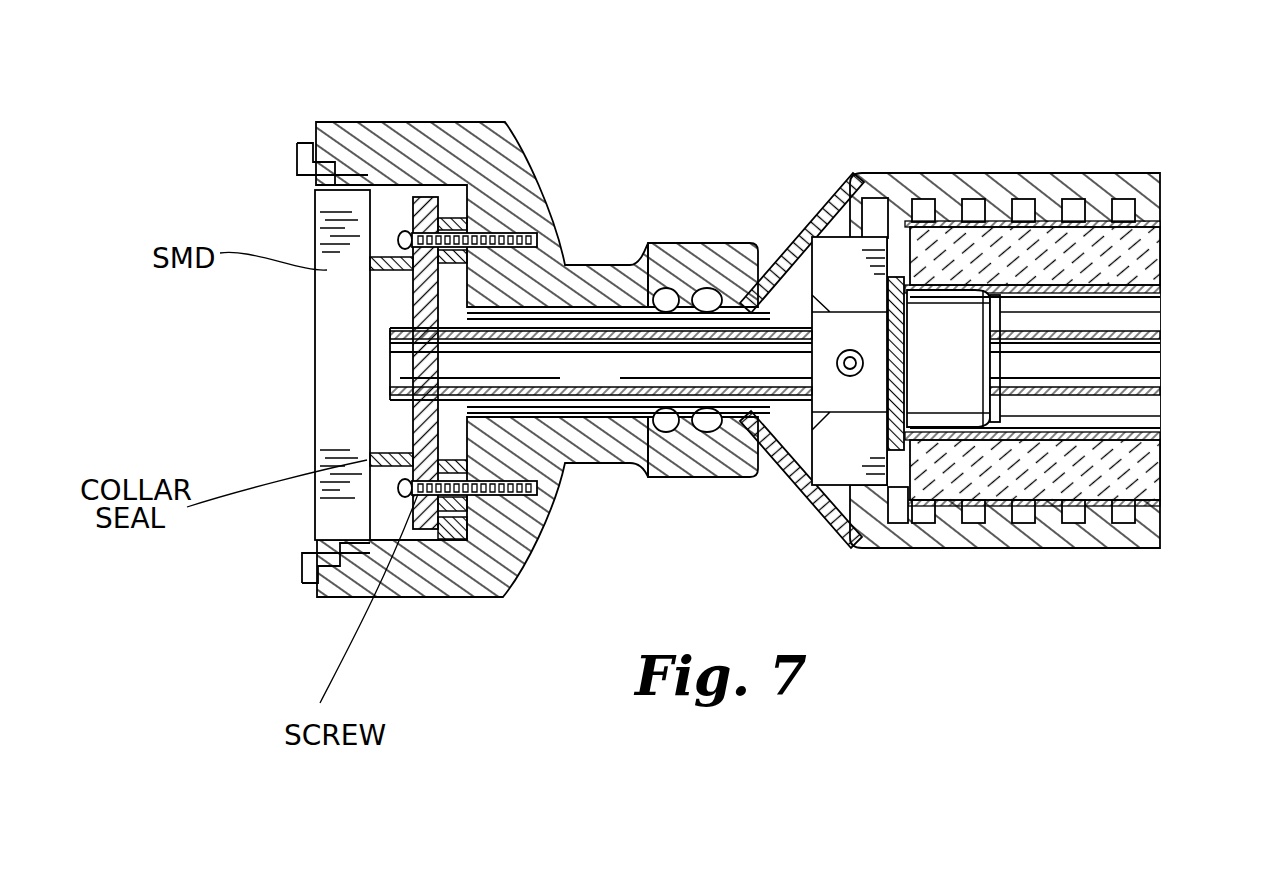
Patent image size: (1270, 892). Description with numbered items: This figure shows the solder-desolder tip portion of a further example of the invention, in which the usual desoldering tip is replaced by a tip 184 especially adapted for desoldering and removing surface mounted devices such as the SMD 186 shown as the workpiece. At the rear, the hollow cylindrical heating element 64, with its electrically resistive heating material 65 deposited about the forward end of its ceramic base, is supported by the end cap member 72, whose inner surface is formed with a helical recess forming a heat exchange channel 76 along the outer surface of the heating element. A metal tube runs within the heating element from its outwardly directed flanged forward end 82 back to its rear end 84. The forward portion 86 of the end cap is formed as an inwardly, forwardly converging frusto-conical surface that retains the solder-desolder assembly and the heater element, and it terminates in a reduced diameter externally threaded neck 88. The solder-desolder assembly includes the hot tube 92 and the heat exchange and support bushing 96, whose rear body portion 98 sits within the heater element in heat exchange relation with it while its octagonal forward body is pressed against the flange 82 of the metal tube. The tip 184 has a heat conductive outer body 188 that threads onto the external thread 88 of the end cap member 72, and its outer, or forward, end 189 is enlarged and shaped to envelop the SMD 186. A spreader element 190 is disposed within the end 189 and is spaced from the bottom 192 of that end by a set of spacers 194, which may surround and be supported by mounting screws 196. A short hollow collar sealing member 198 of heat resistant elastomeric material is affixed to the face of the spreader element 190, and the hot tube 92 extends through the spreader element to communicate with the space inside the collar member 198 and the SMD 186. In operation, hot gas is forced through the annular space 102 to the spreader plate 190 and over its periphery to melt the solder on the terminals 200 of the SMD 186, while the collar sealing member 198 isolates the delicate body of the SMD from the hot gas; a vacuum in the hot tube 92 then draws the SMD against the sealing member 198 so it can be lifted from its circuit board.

The terminals 200 is at (297, 145).
The tip 184 is at (392, 115).
The SMD 186 is at (314, 205).
The bottom 192 is at (470, 266).
The heat conductive outer body 188 is at (660, 243).
The externally threaded neck 88 is at (718, 290).
The forward portion 86 is at (815, 218).
The end cap member 72 is at (906, 172).
The heat exchange channel 76 is at (992, 173).
The electrically resistive heating material 65 is at (1083, 172).
The heating element 64 is at (1152, 258).
The rear end 84 is at (1115, 313).
The hot tube 92 is at (505, 363).
The annular space 102 is at (612, 405).
The rear body portion 98 is at (965, 384).
The heat exchange and support bushing 96 is at (866, 452).
The flanged forward end 82 is at (897, 445).
The mounting screws 196 is at (540, 513).
The spacers 194 is at (467, 512).
The forward end 189 is at (447, 600).
The spreader element 190 is at (423, 530).
The collar sealing member 198 is at (395, 498).